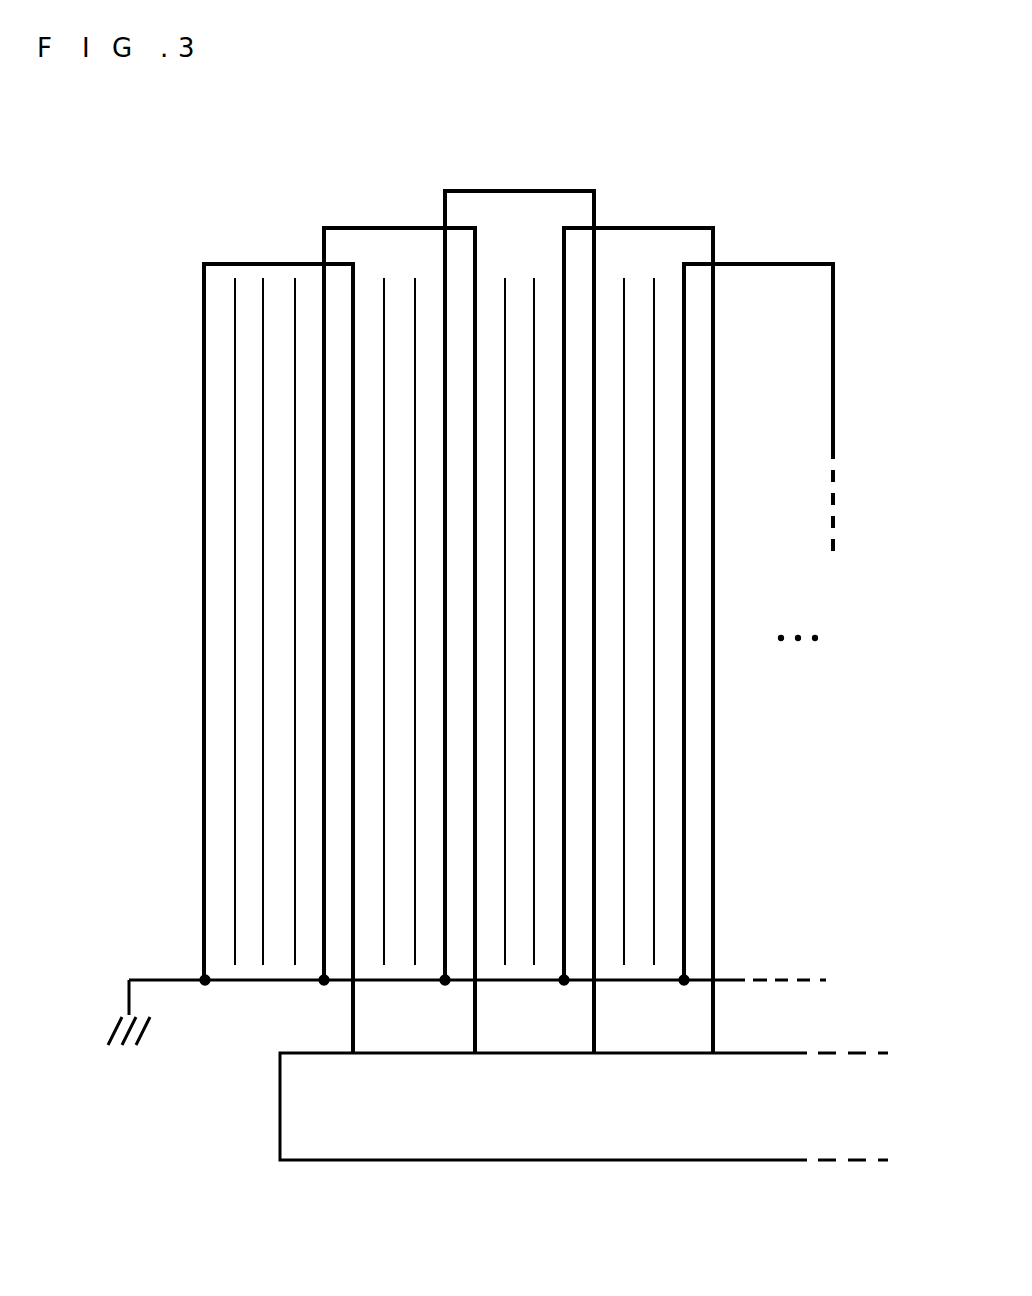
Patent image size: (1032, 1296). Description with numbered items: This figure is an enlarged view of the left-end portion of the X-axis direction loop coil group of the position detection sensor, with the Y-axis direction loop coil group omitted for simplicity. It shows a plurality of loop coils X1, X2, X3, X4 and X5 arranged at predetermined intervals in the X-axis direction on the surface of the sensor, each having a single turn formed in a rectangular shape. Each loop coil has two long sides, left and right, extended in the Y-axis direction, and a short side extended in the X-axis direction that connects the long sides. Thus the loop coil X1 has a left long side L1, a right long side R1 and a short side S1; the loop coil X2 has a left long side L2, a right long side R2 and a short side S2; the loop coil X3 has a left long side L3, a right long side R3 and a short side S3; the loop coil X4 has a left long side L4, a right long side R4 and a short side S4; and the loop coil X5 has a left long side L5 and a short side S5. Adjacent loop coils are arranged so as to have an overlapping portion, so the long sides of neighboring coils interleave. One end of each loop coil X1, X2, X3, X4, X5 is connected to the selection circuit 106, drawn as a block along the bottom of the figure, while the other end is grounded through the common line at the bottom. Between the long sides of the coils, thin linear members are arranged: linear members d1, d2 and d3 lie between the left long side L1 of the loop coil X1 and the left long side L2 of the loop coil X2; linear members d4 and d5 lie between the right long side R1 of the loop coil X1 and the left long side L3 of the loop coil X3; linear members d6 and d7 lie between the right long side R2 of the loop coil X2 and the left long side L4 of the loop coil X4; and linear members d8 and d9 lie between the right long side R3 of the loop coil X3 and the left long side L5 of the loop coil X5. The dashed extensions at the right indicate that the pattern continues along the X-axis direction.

The linear member d1 is at (233, 295).
The linear member d2 is at (262, 295).
The linear member d3 is at (293, 295).
The linear member d4 is at (383, 295).
The linear member d5 is at (413, 295).
The linear member d6 is at (505, 295).
The linear member d7 is at (535, 295).
The linear member d8 is at (623, 295).
The linear member d9 is at (653, 295).
The short side S1 is at (307, 263).
The short side S2 is at (427, 228).
The short side S3 is at (548, 191).
The short side S4 is at (680, 228).
The short side S5 is at (768, 261).
The left long side L1 is at (205, 950).
The left long side L2 is at (324, 950).
The left long side L3 is at (445, 950).
The left long side L4 is at (564, 950).
The left long side L5 is at (684, 950).
The right long side R1 is at (355, 950).
The right long side R2 is at (477, 950).
The right long side R3 is at (596, 950).
The right long side R4 is at (715, 953).
The loop coil X1 is at (350, 1046).
The loop coil X2 is at (472, 1046).
The loop coil X3 is at (594, 1046).
The loop coil X4 is at (710, 1046).
The loop coil X5 is at (834, 324).
The selection circuit 106 is at (488, 1160).